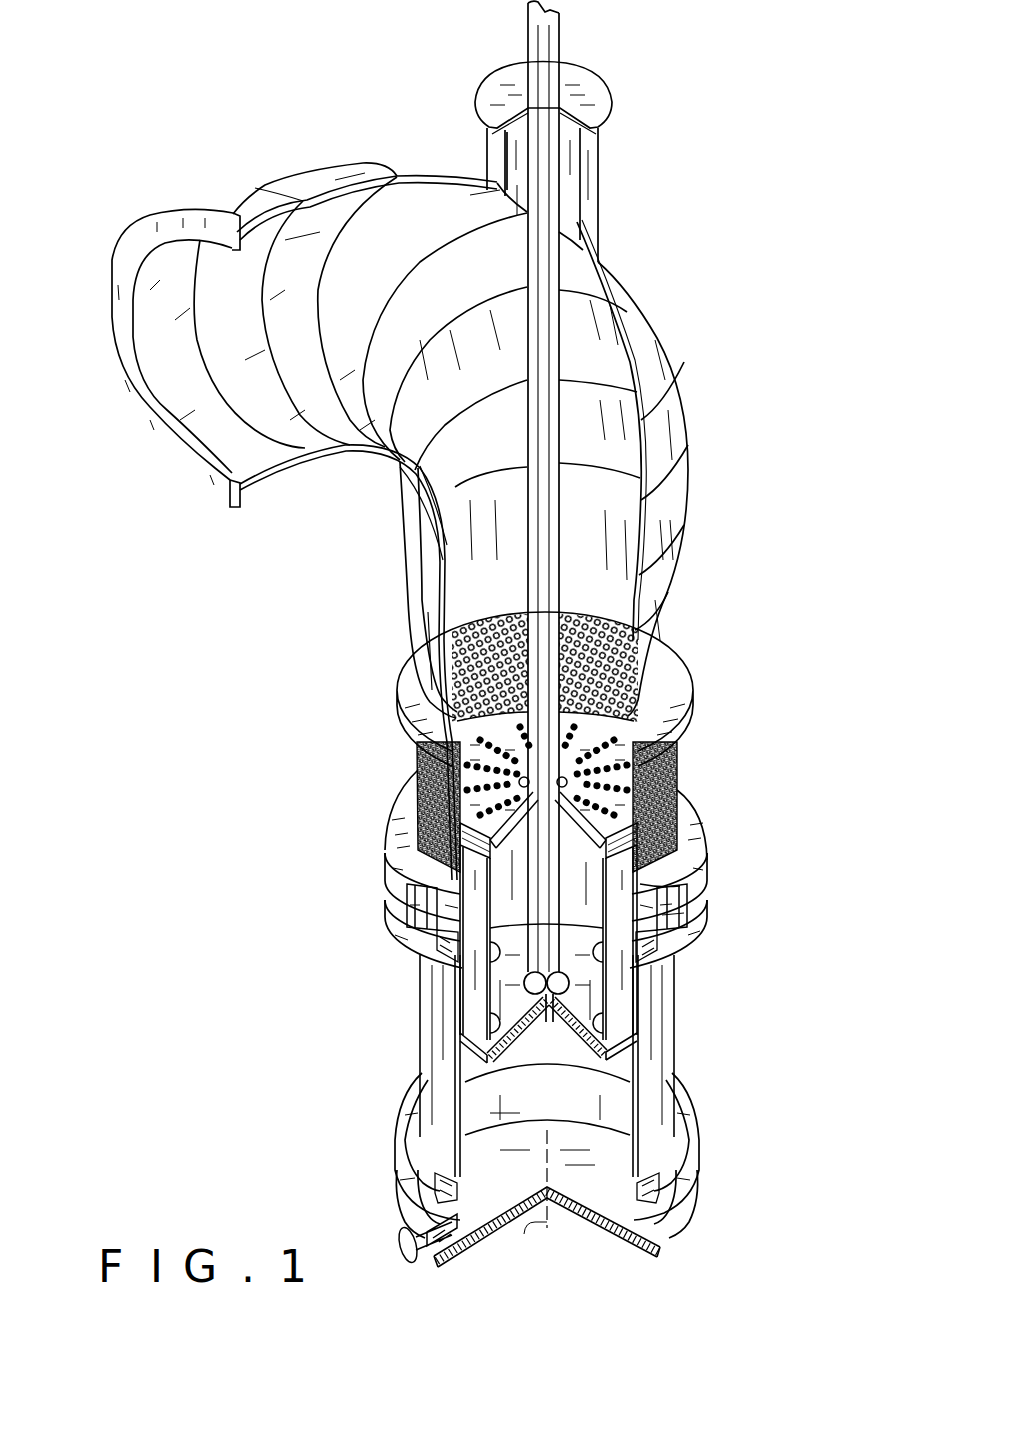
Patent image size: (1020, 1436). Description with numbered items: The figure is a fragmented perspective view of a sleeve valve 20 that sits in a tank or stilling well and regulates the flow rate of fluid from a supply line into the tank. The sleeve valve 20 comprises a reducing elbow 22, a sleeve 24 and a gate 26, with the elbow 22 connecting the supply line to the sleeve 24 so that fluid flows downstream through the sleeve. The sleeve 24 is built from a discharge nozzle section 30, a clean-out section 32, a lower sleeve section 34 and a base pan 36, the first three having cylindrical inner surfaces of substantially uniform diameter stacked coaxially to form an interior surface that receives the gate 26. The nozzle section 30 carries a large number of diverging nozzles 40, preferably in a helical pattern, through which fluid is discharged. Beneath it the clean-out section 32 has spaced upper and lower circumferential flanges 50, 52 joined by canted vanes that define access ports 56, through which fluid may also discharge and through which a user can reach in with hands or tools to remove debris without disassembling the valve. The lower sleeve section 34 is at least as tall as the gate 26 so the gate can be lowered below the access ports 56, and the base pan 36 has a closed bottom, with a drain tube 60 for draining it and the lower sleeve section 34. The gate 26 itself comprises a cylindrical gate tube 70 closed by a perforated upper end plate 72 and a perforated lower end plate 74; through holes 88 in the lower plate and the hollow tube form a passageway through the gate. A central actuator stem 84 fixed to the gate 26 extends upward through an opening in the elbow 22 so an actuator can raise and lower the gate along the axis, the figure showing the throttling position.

The sleeve valve 20 is at (715, 478).
The reducing elbow 22 is at (313, 468).
The sleeve 24 is at (397, 770).
The gate 26 is at (579, 1048).
The discharge nozzle section 30 is at (586, 689).
The clean-out section 32 is at (720, 856).
The lower sleeve section 34 is at (433, 1030).
The base pan 36 is at (390, 1173).
The nozzles 40 is at (455, 636).
The upper circumferential flange 50 is at (403, 836).
The lower circumferential flange 52 is at (392, 910).
The access ports 56 is at (405, 890).
The drain tube 60 is at (428, 1253).
The gate tube 70 is at (485, 988).
The upper end plate 72 is at (681, 882).
The lower end plate 74 is at (513, 1032).
The central actuator stem 84 is at (527, 48).
The through holes 88 is at (600, 1022).